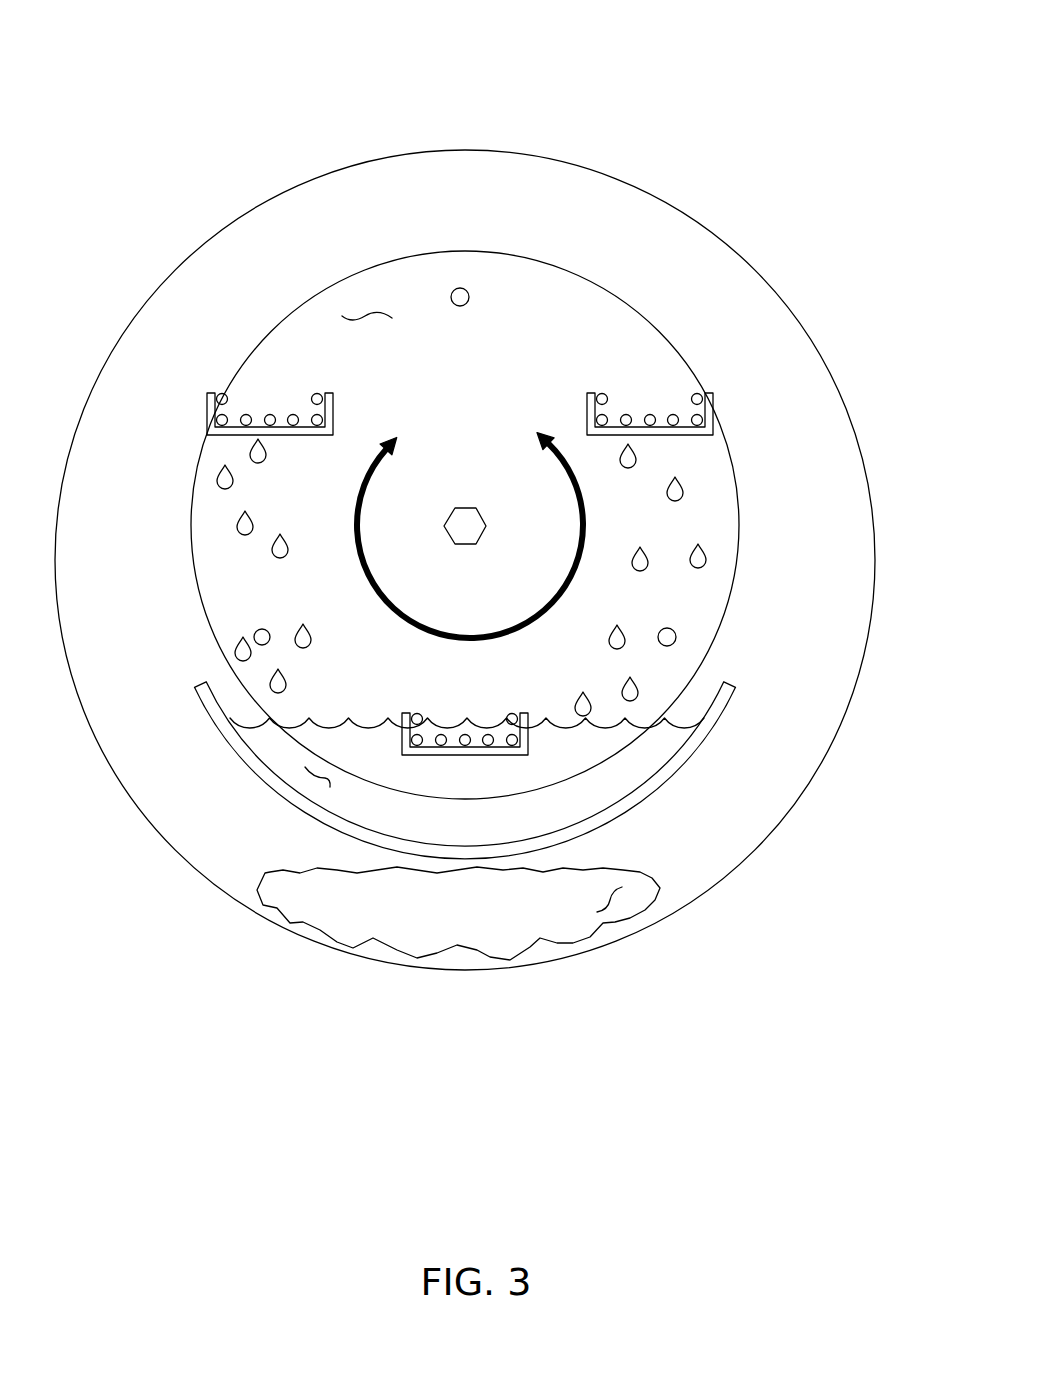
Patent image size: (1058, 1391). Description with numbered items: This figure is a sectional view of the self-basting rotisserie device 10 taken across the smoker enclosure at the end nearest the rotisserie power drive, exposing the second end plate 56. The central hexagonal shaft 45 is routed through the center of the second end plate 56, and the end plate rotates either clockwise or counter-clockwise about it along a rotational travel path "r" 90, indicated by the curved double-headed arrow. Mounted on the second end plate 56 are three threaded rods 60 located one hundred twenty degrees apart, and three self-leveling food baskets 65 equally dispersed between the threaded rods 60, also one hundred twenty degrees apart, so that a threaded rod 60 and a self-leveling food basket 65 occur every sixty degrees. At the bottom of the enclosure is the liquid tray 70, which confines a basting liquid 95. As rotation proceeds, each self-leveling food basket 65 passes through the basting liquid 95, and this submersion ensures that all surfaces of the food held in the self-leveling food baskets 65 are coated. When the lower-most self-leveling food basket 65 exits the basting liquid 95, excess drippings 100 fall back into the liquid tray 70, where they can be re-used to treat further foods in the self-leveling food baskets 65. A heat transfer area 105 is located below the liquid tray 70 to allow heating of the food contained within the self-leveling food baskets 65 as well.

The self-basting rotisserie device 10 is at (119, 168).
The central hexagonal shaft 45 is at (468, 506).
The second end plate 56 is at (368, 312).
The threaded rods 60 is at (466, 289).
The self-leveling food baskets 65 is at (272, 415).
The liquid tray 70 is at (223, 740).
The rotational travel path 90 is at (585, 542).
The basting liquid 95 is at (315, 778).
The excess drippings 100 is at (218, 474).
The heat transfer area 105 is at (610, 898).